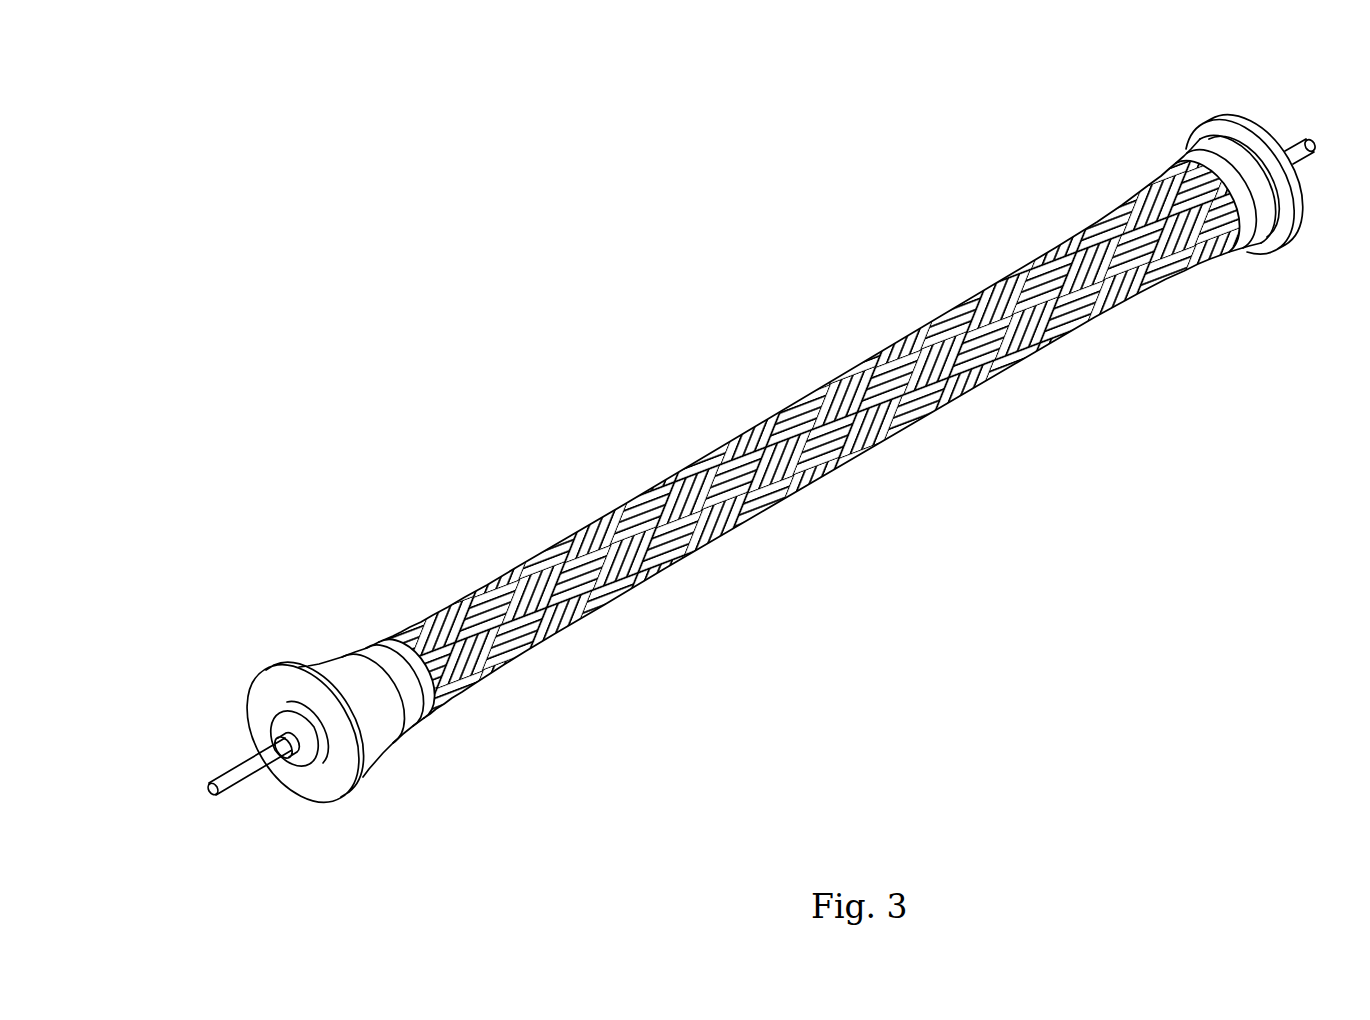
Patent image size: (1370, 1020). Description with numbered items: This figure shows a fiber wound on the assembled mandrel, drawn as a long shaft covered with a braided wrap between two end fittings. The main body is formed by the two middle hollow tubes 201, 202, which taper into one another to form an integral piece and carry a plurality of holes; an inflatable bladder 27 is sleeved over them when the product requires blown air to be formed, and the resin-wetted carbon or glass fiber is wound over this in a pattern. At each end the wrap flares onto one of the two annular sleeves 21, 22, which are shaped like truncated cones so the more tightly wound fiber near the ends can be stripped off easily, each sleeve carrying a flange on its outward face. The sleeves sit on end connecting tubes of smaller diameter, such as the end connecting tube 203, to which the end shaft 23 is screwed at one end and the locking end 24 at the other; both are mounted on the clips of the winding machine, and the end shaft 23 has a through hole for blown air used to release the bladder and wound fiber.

The annular sleeve 21 is at (279, 672).
The annular sleeve 22 is at (1235, 211).
The end shaft 23 is at (237, 770).
The locking end 24 is at (1310, 165).
The inflatable bladder 27 is at (1197, 142).
The middle hollow tube 201 is at (809, 439).
The middle hollow tube 202 is at (932, 313).
The end connecting tube 203 is at (291, 718).